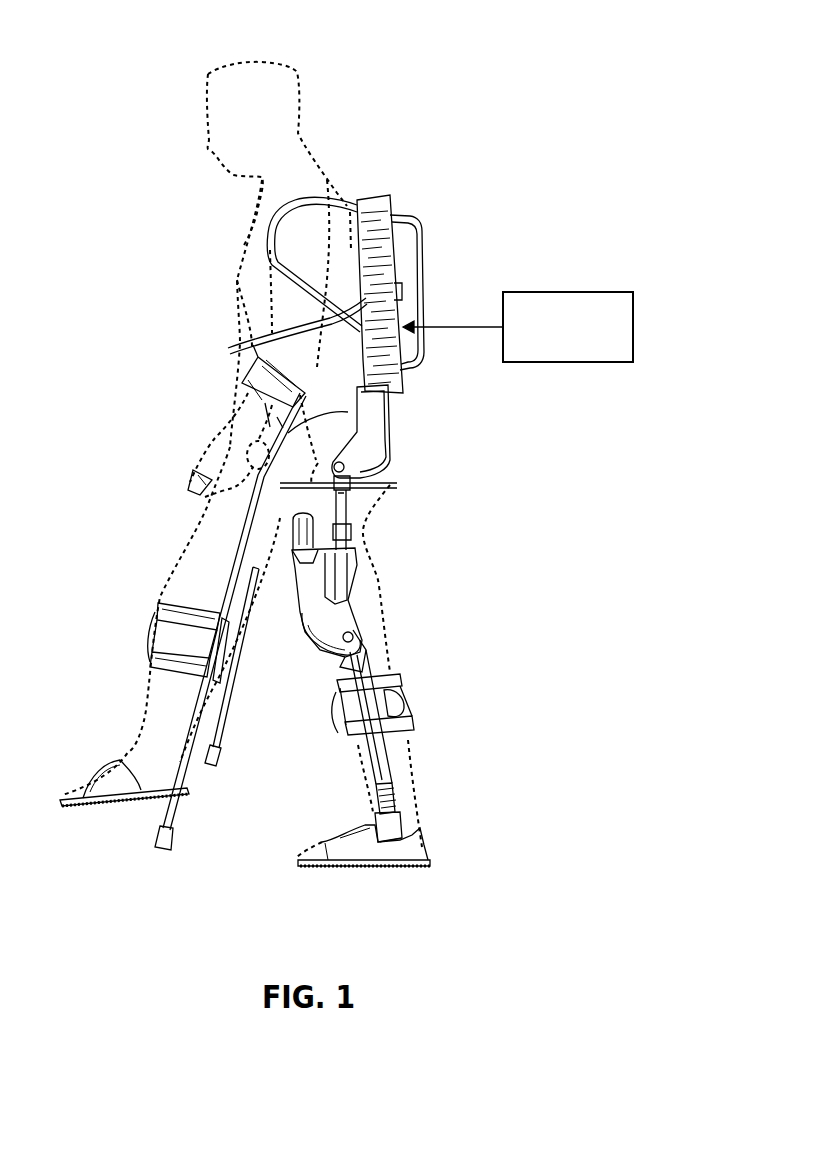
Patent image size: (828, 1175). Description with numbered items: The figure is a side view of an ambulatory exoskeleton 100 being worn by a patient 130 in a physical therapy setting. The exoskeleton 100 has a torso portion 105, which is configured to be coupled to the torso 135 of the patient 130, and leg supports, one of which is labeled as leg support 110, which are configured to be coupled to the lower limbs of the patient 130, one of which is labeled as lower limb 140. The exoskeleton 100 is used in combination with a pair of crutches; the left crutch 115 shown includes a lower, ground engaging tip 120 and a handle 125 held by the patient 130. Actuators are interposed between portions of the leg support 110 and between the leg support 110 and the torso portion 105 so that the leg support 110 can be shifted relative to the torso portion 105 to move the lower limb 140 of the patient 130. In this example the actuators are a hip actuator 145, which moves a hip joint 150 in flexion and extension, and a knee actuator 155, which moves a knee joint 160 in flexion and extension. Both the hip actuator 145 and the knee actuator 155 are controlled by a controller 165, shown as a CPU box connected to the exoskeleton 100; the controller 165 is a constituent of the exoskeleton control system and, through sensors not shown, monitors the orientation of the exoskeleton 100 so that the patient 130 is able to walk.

The exoskeleton 100 is at (393, 208).
The torso portion 105 is at (330, 357).
The leg support 110 is at (402, 714).
The left crutch 115 is at (215, 594).
The ground engaging tip 120 is at (158, 832).
The handle 125 is at (192, 480).
The patient 130 is at (208, 74).
The torso 135 is at (250, 320).
The lower limb 140 is at (381, 588).
The hip actuator 145 is at (372, 427).
The hip joint 150 is at (370, 460).
The knee actuator 155 is at (310, 607).
The knee joint 160 is at (314, 663).
The controller 165 is at (634, 326).